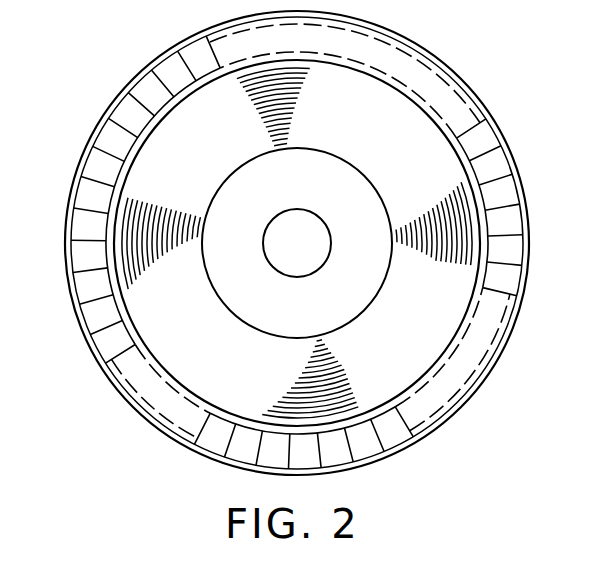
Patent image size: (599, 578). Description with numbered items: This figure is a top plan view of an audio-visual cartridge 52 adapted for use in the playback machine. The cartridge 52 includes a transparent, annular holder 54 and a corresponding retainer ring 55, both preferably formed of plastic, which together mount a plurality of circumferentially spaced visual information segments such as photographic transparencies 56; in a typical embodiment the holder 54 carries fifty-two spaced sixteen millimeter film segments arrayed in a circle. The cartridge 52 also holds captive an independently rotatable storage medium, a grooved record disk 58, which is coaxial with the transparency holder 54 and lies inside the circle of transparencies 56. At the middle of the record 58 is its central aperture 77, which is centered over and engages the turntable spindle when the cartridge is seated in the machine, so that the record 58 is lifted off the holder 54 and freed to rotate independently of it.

The audio-visual cartridge 52 is at (84, 352).
The transparent annular holder 54 is at (142, 399).
The retainer ring 55 is at (118, 176).
The photographic transparencies 56 is at (98, 315).
The grooved record disk 58 is at (130, 192).
The central aperture 77 is at (276, 274).